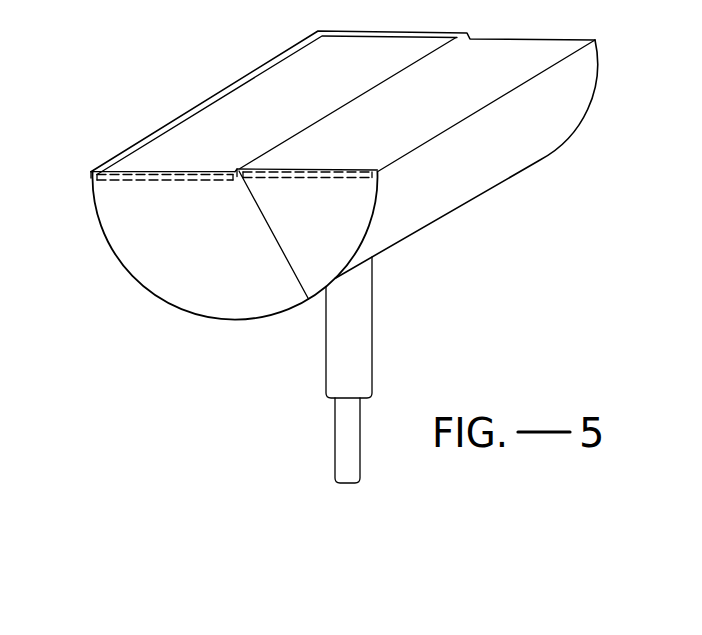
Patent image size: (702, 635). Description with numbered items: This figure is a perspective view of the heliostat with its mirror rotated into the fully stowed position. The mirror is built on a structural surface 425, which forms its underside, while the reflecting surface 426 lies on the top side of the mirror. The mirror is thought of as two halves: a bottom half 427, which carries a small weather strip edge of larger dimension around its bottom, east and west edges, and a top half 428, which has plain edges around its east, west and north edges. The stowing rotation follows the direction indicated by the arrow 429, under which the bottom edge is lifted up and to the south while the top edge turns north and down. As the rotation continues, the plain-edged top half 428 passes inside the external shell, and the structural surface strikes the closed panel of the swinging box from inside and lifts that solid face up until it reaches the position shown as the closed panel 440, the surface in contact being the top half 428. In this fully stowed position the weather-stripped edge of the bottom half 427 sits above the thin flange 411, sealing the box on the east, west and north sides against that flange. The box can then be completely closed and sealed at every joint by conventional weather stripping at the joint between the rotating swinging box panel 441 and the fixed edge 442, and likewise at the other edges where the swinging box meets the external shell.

The arrow 429 is at (343, 104).
The thin flange 411 is at (243, 79).
The structural surface 425 is at (314, 112).
The closed panel of swinging box 440 is at (436, 121).
The rotating swinging box panel 441 is at (330, 242).
The reflecting surface 426 is at (114, 184).
The bottom half of mirror 427 is at (152, 181).
The top half of mirror 428 is at (300, 183).
The fixed edge 442 is at (299, 292).